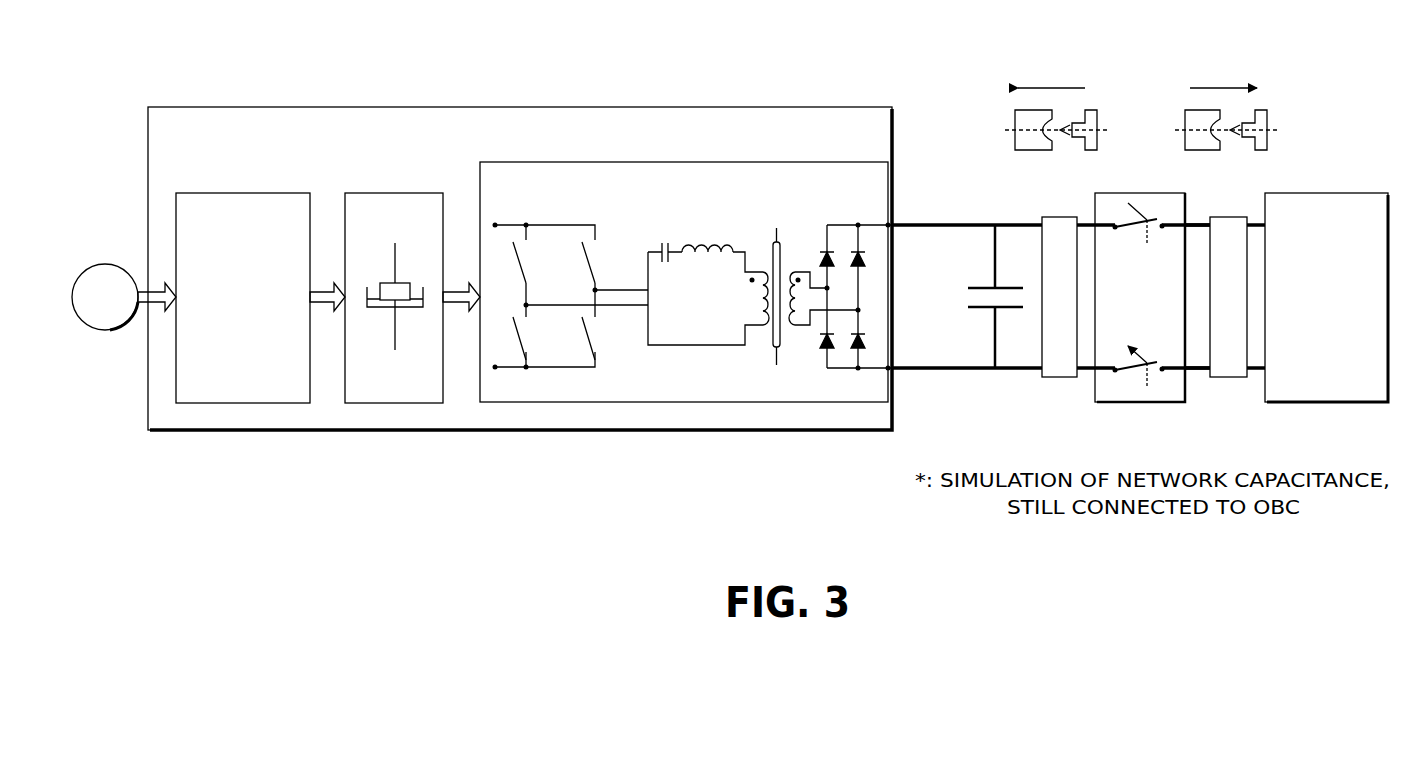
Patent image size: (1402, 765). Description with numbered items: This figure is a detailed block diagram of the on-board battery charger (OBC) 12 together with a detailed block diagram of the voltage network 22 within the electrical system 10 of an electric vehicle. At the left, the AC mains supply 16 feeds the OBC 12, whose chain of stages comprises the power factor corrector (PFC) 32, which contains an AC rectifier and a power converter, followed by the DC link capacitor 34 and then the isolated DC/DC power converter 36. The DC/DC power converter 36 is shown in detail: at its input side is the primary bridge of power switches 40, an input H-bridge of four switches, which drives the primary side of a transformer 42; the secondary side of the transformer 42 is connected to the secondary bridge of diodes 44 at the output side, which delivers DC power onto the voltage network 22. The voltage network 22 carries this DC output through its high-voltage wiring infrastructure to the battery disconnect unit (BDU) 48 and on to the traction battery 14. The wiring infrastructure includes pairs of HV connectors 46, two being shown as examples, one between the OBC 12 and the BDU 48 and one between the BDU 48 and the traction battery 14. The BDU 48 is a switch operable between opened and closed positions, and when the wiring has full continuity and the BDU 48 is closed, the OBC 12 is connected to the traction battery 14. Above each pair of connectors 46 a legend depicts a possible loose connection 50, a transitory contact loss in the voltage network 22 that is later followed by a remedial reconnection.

The electrical system 10 is at (1315, 23).
The on-board battery charger (OBC) 12 is at (520, 235).
The traction battery 14 is at (1330, 275).
The mains supply 16 is at (105, 259).
The HV network 22 is at (1085, 199).
The power factor corrector (PFC) 32 is at (241, 274).
The DC link capacitor 34 is at (384, 274).
The DC/DC power converter 36 is at (686, 258).
The primary bridge of power switches 40 is at (594, 311).
The transformer 42 is at (753, 285).
The secondary bridge of diodes 44 is at (856, 297).
The HV connectors 46 is at (1151, 336).
The battery disconnect unit (BDU) 48 is at (1162, 280).
The loose connection 50 is at (1110, 134).